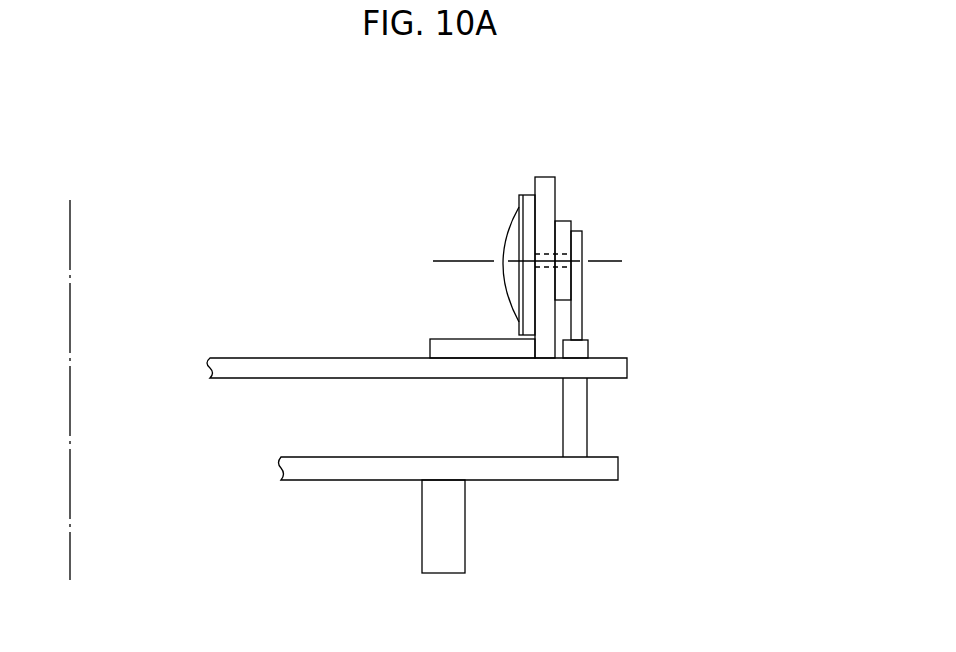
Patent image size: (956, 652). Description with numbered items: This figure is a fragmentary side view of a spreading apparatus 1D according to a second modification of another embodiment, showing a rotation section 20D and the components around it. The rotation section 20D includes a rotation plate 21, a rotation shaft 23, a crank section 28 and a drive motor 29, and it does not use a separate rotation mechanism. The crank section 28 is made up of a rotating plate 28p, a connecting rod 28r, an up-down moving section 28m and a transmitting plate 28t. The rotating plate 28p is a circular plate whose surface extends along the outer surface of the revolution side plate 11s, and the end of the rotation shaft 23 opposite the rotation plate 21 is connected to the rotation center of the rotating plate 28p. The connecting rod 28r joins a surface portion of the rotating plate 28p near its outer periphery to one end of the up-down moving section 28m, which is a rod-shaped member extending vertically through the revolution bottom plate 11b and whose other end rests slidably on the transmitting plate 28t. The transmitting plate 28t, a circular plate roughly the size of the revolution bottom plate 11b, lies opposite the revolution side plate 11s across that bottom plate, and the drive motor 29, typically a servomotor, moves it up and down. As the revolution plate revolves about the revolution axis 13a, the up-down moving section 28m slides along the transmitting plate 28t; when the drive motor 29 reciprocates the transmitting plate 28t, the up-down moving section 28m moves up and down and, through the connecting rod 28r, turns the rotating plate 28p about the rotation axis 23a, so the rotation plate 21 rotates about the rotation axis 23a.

The spreading apparatus 1D is at (178, 100).
The revolution axis 13a is at (70, 228).
The revolution bottom plate 11b is at (247, 357).
The revolution side plate 11s is at (535, 186).
The rotation plate 21 is at (521, 324).
The rotation shaft 23 is at (562, 253).
The rotation axis 23a is at (610, 263).
The crank section 28 is at (506, 287).
The rotating plate 28p is at (560, 221).
The connecting rod 28r is at (582, 252).
The up-down moving section 28m is at (588, 352).
The transmitting plate 28t is at (618, 467).
The drive motor 29 is at (465, 543).
The rotation section 20D is at (759, 161).